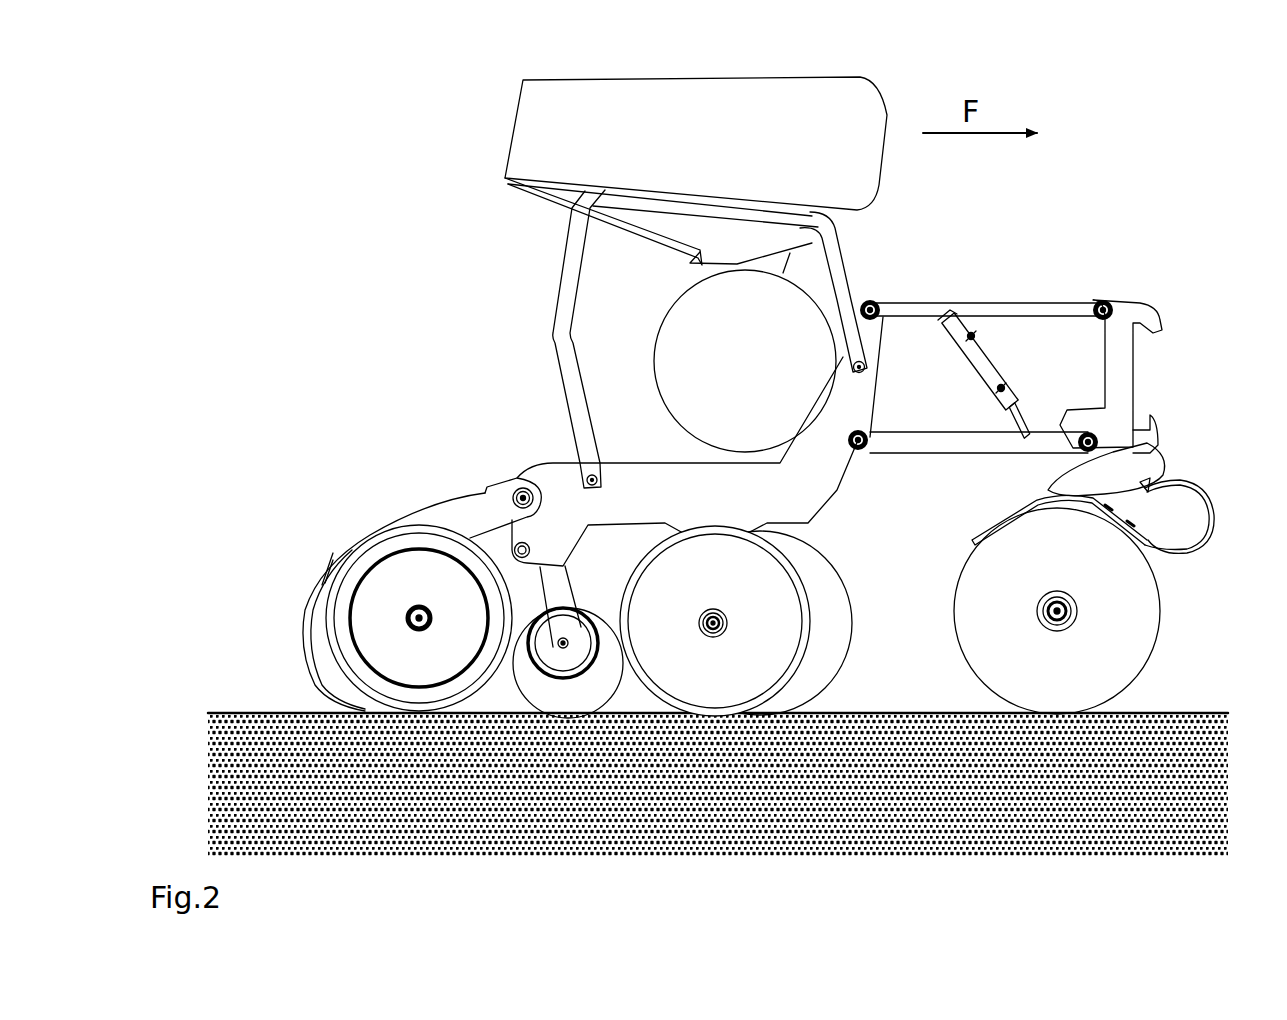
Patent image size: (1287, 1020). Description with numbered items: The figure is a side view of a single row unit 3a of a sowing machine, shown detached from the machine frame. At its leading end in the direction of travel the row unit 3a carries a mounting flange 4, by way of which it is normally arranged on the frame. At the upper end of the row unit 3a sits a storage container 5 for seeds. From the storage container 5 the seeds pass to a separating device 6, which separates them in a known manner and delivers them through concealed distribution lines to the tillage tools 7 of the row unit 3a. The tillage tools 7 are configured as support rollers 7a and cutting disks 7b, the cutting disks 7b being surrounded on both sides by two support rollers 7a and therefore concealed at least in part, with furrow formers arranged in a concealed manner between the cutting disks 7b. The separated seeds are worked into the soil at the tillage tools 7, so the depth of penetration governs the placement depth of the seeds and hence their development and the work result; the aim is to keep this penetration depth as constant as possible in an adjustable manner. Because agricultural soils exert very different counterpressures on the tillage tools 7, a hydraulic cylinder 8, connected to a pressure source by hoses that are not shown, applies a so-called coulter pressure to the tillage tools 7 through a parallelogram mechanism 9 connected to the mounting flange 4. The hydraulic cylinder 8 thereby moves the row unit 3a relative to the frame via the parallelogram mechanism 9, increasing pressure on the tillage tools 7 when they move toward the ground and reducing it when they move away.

The row unit 3a is at (445, 140).
The storage container 5 is at (594, 98).
The separating device 6 is at (792, 313).
The parallelogram mechanism 9 is at (1097, 290).
The hydraulic cylinder 8 is at (987, 360).
The mounting flange 4 is at (1173, 322).
The tillage tools 7 is at (832, 555).
The support rollers 7a is at (757, 571).
The cutting disks 7b is at (837, 657).